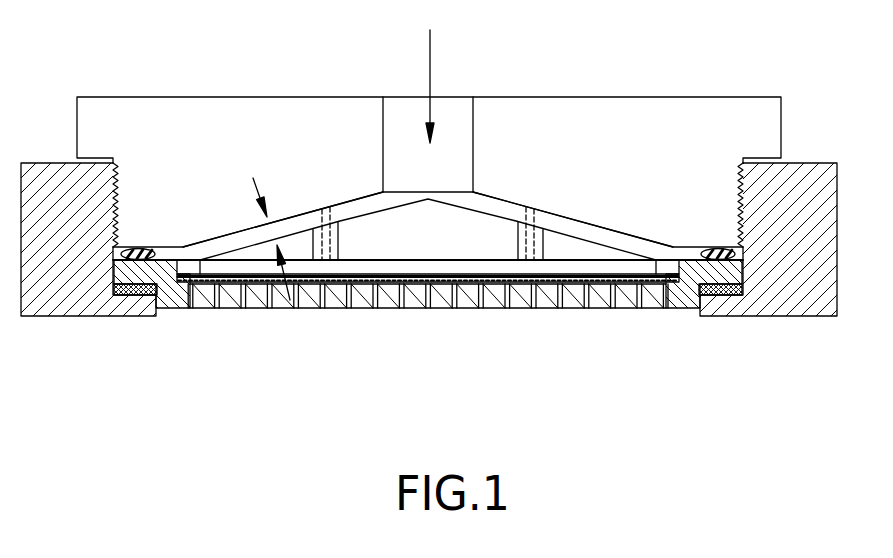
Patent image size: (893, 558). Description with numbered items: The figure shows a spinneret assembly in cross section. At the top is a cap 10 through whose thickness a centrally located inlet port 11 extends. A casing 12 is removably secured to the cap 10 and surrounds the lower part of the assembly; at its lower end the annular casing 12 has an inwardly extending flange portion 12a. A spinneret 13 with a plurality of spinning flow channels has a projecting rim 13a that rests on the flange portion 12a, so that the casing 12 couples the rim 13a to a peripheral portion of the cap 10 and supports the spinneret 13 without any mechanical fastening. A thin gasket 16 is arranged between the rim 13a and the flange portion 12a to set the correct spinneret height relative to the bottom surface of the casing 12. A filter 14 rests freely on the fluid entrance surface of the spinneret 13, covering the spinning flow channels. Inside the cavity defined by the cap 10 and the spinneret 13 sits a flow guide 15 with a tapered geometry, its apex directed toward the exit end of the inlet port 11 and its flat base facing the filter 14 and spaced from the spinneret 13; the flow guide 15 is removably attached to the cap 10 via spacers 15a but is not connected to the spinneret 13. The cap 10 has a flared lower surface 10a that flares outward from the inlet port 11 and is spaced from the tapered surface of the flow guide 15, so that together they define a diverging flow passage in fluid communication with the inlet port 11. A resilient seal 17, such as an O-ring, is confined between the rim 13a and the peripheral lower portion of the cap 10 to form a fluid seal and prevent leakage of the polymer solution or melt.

The cap 10 is at (699, 116).
The flared lower surface 10a is at (584, 195).
The inlet port 11 is at (491, 119).
The casing 12 is at (819, 156).
The flange portion 12a is at (132, 305).
The spinneret 13 is at (483, 330).
The projecting rim 13a is at (139, 265).
The filter 14 is at (610, 302).
The flow guide 15 is at (306, 265).
The spacers 15a is at (351, 197).
The gasket 16 is at (726, 313).
The resilient seal 17 is at (140, 228).